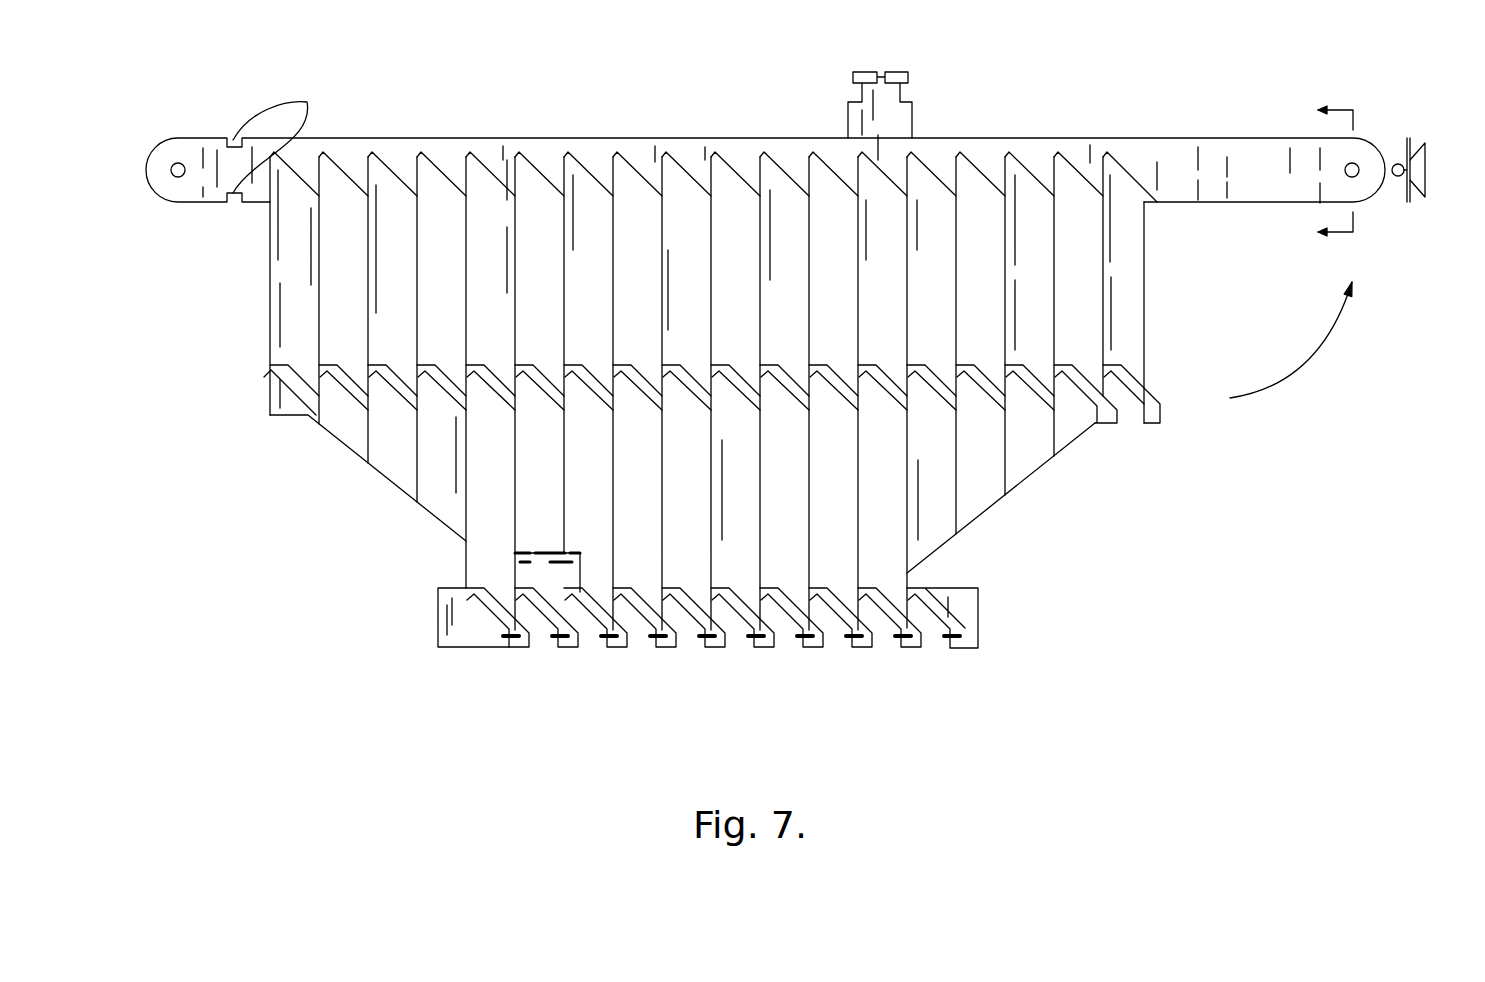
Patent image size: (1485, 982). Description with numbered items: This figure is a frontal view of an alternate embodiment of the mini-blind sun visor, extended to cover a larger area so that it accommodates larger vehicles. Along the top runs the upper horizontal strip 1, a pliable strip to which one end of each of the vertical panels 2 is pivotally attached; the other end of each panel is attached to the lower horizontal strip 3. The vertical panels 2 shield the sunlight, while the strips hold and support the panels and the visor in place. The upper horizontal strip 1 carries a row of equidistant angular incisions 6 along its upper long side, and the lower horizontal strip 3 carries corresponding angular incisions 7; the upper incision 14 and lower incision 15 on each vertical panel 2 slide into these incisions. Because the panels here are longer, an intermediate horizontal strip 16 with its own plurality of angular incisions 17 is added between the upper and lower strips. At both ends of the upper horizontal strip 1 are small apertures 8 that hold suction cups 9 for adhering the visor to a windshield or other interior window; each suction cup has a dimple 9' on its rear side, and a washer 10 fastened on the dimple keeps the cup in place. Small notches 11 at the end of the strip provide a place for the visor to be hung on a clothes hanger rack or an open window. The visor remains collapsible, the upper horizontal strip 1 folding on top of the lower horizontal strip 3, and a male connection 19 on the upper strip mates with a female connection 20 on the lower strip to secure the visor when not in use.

The upper horizontal strip 1 is at (180, 194).
The vertical panels 2 is at (990, 490).
The lower horizontal strip 3 is at (977, 607).
The angular incisions 6 is at (590, 172).
The angular incisions 7 is at (825, 615).
The small apertures 8 is at (180, 163).
The suction cups 9 is at (1441, 156).
The dimples 9' is at (1404, 119).
The washer 10 is at (1410, 200).
The small notches 11 is at (296, 130).
The upper incision 14 is at (500, 168).
The lower incision 15 is at (470, 608).
The intermediate horizontal strip 16 is at (1160, 408).
The angular incisions 17 is at (483, 390).
The male connection 19 is at (902, 118).
The female connection 20 is at (556, 575).